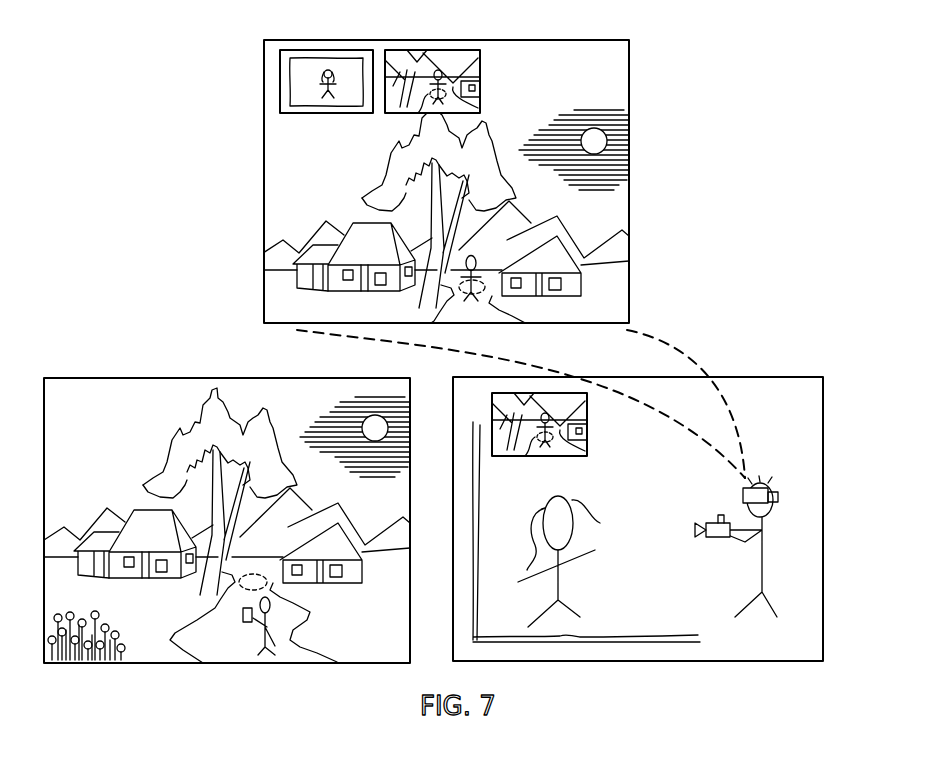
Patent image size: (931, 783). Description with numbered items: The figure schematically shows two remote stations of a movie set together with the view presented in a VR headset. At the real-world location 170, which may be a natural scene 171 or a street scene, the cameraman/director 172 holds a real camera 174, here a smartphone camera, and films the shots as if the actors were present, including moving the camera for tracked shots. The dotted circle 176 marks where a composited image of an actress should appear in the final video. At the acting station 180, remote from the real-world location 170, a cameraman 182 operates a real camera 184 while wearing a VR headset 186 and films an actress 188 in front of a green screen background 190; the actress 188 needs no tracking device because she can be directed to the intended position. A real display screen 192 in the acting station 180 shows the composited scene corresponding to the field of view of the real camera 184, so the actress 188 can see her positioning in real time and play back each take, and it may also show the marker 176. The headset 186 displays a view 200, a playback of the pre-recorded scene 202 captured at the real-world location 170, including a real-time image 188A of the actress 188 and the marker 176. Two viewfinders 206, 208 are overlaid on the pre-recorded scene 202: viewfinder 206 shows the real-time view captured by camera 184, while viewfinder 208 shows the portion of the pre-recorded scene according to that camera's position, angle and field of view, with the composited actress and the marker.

The real-world location 170 is at (116, 377).
The natural scene 171 is at (161, 387).
The cameraman/director 172 is at (265, 656).
The real camera 174 is at (243, 616).
The dotted circle 176 is at (253, 573).
The acting station 180 is at (762, 375).
The cameraman 182 is at (750, 590).
The real camera 184 is at (693, 527).
The VR headset 186 is at (743, 493).
The actress 188 is at (567, 497).
The real-time image of the actress 188A is at (482, 257).
The green screen background 190 is at (652, 645).
The real display screen 192 is at (588, 428).
The view 200 is at (628, 81).
The pre-recorded scene 202 is at (618, 213).
The viewfinder 206 is at (332, 50).
The viewfinder 208 is at (423, 50).